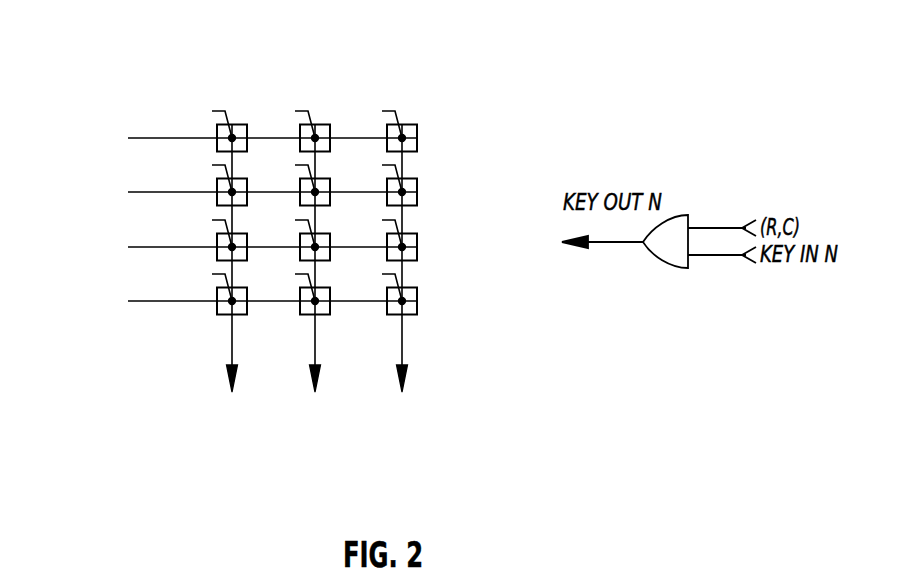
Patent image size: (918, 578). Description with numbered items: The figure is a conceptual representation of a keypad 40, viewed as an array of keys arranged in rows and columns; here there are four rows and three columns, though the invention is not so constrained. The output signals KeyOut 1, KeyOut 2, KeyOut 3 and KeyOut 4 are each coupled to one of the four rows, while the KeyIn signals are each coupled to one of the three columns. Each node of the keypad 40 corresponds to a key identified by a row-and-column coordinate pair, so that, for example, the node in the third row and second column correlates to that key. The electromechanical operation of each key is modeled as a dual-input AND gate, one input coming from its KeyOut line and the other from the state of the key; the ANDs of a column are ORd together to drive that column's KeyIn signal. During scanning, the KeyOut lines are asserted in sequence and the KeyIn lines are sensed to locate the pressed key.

The keypad 40 is at (128, 83).
The key out line 1 is at (118, 132).
The key out line 2 is at (118, 186).
The key out line 3 is at (118, 241).
The key out line 4 is at (118, 295).